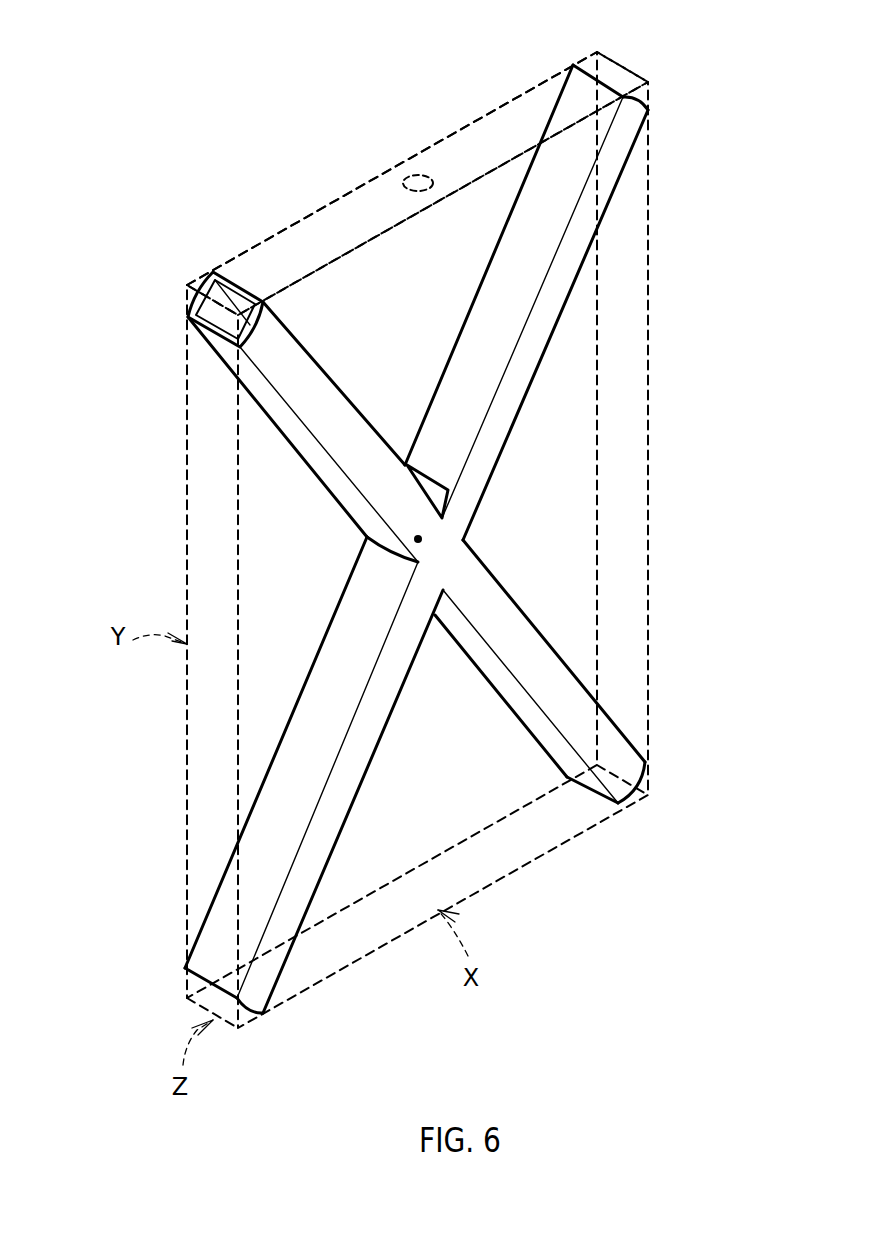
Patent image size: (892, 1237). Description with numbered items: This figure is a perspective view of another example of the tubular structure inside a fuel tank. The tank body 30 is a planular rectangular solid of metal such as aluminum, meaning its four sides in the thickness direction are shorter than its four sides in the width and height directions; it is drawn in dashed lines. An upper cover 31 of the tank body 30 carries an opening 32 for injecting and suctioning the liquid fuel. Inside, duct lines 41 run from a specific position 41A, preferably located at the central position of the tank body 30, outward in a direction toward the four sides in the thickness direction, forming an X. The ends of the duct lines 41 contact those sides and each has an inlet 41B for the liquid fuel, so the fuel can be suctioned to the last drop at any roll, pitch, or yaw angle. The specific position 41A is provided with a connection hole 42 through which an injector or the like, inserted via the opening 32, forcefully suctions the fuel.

The tank body 30 is at (649, 405).
The upper cover 31 is at (470, 145).
The opening 32 is at (418, 172).
The duct line 41 is at (417, 539).
The specific position 41A is at (422, 536).
The inlet 41B is at (233, 277).
The connection hole 42 is at (432, 475).